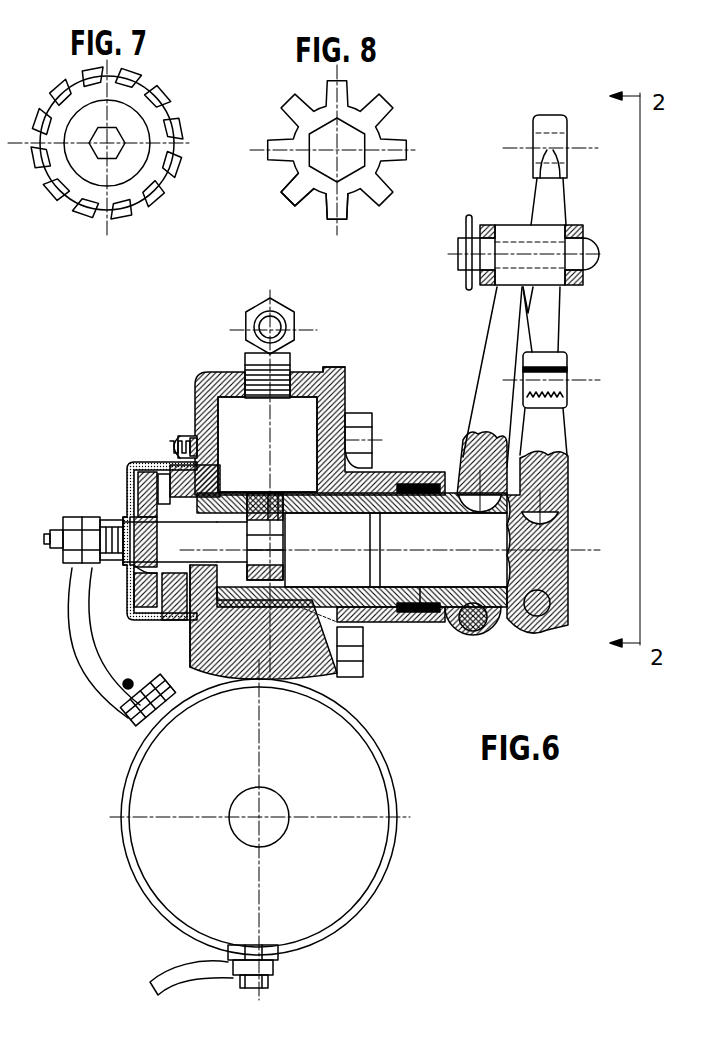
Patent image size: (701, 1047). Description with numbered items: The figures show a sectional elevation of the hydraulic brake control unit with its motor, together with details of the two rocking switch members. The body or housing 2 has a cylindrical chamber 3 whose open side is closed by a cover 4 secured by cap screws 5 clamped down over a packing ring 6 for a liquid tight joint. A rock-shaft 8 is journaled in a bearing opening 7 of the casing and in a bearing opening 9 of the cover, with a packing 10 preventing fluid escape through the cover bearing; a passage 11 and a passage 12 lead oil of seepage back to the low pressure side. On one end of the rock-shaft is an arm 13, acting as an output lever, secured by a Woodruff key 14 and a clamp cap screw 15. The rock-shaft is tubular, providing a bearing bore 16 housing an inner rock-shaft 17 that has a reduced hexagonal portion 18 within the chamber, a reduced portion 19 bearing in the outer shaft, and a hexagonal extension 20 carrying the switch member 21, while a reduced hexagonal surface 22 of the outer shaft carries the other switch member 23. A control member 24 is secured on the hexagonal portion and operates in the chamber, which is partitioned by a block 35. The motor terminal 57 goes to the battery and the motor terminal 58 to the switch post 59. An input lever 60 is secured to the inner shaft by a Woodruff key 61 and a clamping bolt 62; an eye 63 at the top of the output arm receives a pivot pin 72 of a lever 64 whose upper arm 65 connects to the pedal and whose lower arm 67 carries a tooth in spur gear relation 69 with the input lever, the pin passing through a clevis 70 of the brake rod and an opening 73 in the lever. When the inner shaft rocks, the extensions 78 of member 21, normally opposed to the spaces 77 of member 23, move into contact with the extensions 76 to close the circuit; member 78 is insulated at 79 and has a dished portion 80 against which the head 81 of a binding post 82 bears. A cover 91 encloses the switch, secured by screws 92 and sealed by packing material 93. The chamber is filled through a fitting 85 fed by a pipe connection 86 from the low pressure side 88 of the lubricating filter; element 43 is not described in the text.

In FIG. 6, the body or housing 2 is at (303, 378).
In FIG. 6, the cylindrical chamber 3 is at (267, 444).
In FIG. 6, the cover 4 is at (377, 471).
In FIG. 6, the cap screws 5 is at (365, 424).
In FIG. 6, the packing ring 6 is at (325, 371).
In FIG. 6, the bearing opening 7 is at (178, 582).
In FIG. 6, the rock-shaft 8 is at (360, 677).
In FIG. 6, the bearing opening 9 is at (365, 612).
In FIG. 6, the packing 10 is at (433, 622).
In FIG. 6, the passage 11 is at (220, 615).
In FIG. 6, the passage 12 is at (317, 620).
In FIG. 6, the arm 13 is at (493, 378).
In FIG. 6, the Woodruff key 14 is at (468, 500).
In FIG. 6, the clamp cap screw 15 is at (476, 622).
In FIG. 6, the bearing bore 16 is at (420, 600).
In FIG. 6, the rock-shaft 17 is at (396, 550).
In FIG. 6, the reduced hexagonal portion 18 is at (272, 542).
In FIG. 6, the reduced portion 19 is at (245, 545).
In FIG. 7, the hexagonal extension 20 is at (120, 128).
In FIG. 6, the hexagonal extension 20 is at (147, 537).
In FIG. 7, the switch member 21 is at (83, 160).
In FIG. 8, the reduced hexagonal surface 22 is at (365, 168).
In FIG. 6, the reduced hexagonal surface 22 is at (195, 485).
In FIG. 8, the switch member 23 is at (306, 180).
In FIG. 6, the switch member 23 is at (160, 603).
In FIG. 6, the control member 24 is at (275, 492).
In FIG. 6, the block 35 is at (263, 640).
In FIG. 6, the reservoir 43 is at (348, 878).
In FIG. 6, the motor terminal 57 is at (273, 987).
In FIG. 6, the motor terminal 58 is at (145, 707).
In FIG. 6, the switch post 59 is at (75, 518).
In FIG. 6, the valve controlling lever or input lever 60 is at (545, 442).
In FIG. 6, the Woodruff key 61 is at (567, 500).
In FIG. 6, the clamping bolt 62 is at (545, 608).
In FIG. 6, the eye 63 is at (508, 237).
In FIG. 6, the lever 64 is at (553, 193).
In FIG. 6, the upper arm 65 is at (558, 143).
In FIG. 6, the lower arm 67 is at (545, 328).
In FIG. 6, the spur gear relation 69 is at (560, 381).
In FIG. 6, the clevis 70 is at (483, 287).
In FIG. 6, the pivot pin 72 is at (459, 263).
In FIG. 6, the opening 73 is at (550, 270).
In FIG. 8, the extensions 76 is at (333, 216).
In FIG. 7, the spaces 77 is at (145, 182).
In FIG. 7, the extensions 78 is at (128, 200).
In FIG. 6, the extensions 78 is at (140, 468).
In FIG. 7, the insulation 79 is at (98, 200).
In FIG. 6, the insulation 79 is at (128, 473).
In FIG. 6, the dished portion 80 is at (135, 575).
In FIG. 6, the head 81 is at (123, 510).
In FIG. 6, the binding post 82 is at (53, 538).
In FIG. 6, the fitting 85 is at (247, 357).
In FIG. 6, the pipe connection 86 is at (281, 318).
In FIG. 6, the low pressure side 88 is at (113, 563).
In FIG. 6, the cover 91 is at (143, 620).
In FIG. 6, the screws 92 is at (175, 442).
In FIG. 6, the packing material 93 is at (194, 436).